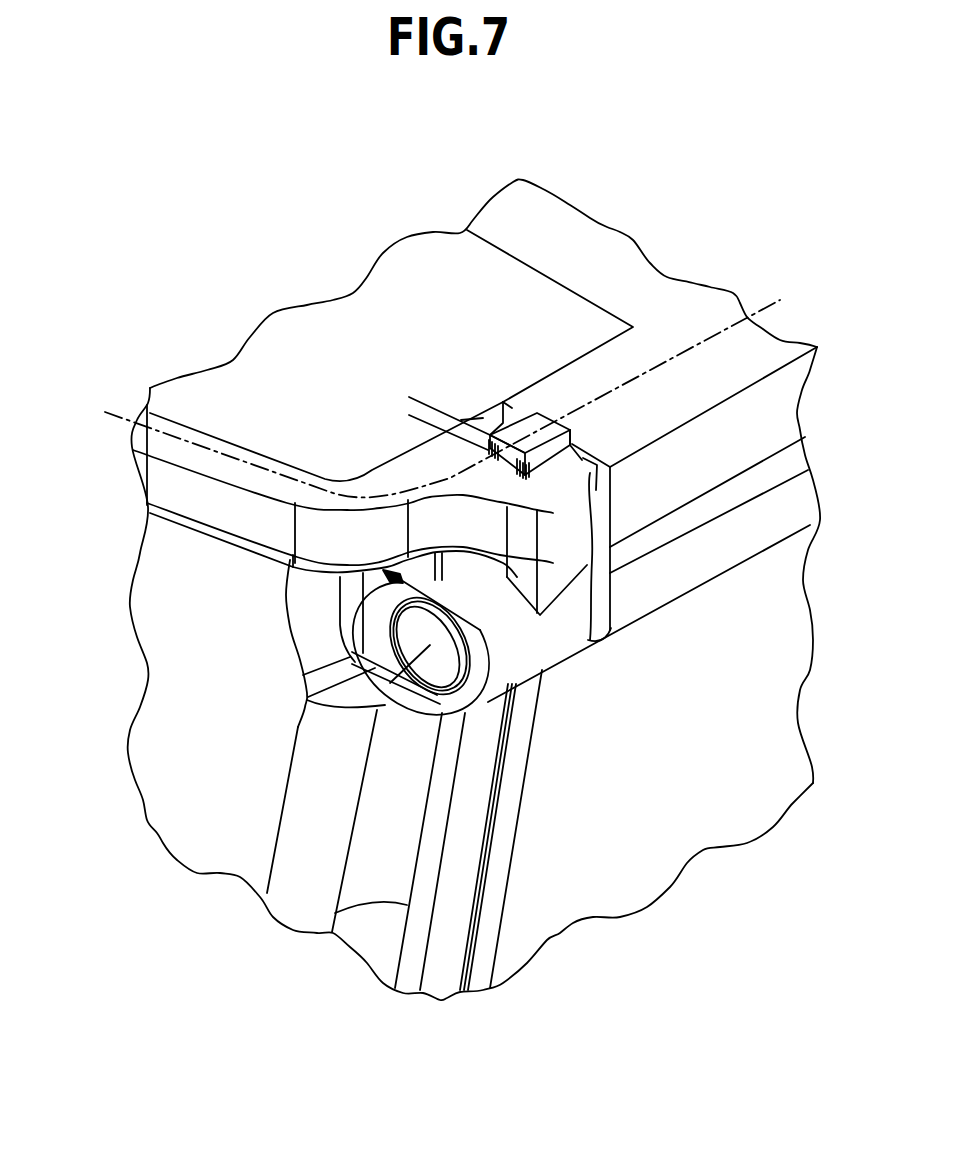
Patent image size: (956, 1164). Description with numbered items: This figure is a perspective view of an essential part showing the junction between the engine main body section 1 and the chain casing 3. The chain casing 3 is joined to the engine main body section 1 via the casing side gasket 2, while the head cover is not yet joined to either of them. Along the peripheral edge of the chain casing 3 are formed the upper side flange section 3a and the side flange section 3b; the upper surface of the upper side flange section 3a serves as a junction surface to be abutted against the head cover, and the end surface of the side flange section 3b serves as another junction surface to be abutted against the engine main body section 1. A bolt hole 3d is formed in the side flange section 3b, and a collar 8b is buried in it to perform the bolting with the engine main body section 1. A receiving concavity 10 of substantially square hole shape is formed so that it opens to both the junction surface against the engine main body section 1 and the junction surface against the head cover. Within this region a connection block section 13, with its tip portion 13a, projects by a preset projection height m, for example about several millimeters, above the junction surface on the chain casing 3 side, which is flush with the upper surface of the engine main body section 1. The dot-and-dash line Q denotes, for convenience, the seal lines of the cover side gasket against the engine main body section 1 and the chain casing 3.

The engine main body section 1 is at (693, 866).
The casing side gasket 2 is at (508, 767).
The chain casing 3 is at (133, 682).
The upper side flange section 3a is at (193, 463).
The side flange section 3b is at (477, 827).
The bolt hole 3d is at (307, 702).
The collar 8b is at (443, 700).
The receiving concavity 10 is at (540, 460).
The connection block section 13 is at (563, 450).
The block portion of fastening bracket 13a is at (533, 423).
The dot-and-dash line Q is at (358, 490).
The projection height m is at (418, 447).